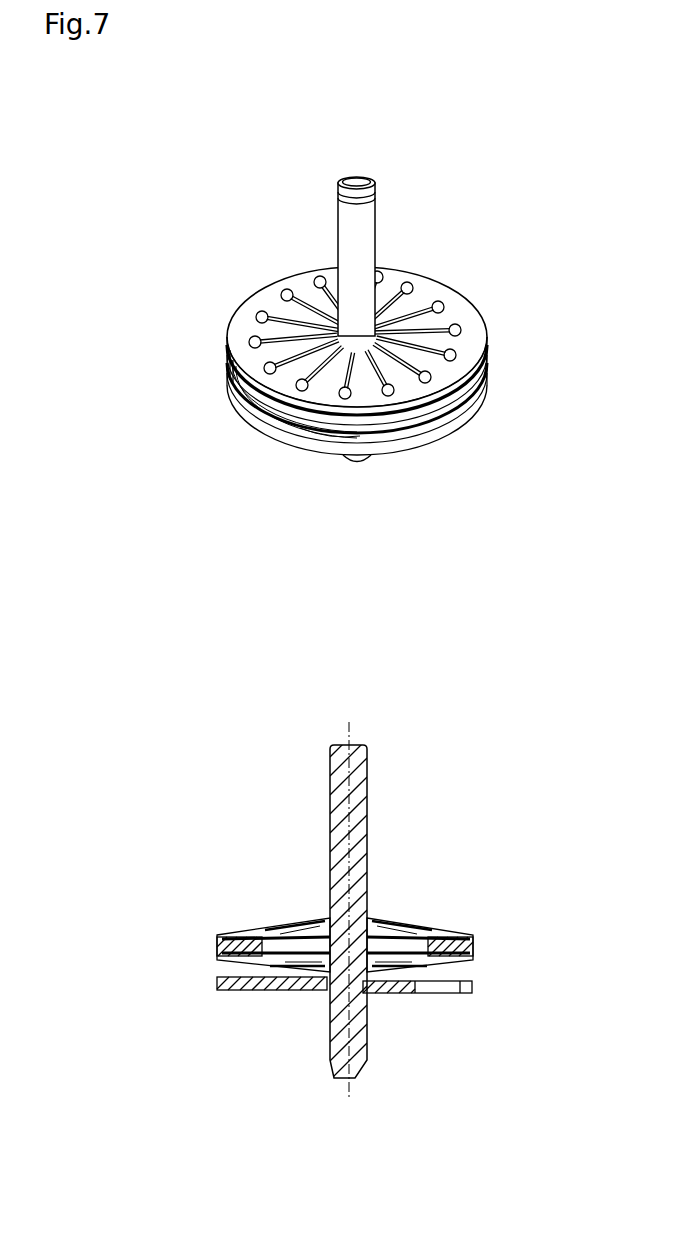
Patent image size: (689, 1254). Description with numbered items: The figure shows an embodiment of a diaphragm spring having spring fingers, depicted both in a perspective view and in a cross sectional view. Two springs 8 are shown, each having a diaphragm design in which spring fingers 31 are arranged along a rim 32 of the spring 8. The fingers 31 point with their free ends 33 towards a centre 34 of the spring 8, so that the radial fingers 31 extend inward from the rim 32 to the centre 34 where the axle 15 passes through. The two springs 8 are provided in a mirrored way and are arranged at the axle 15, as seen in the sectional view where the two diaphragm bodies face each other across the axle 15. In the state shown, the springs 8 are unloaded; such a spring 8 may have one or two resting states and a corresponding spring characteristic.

The spring 8 is at (254, 252).
The axle 15 is at (362, 243).
The spring fingers 31 is at (262, 350).
The rim 32 is at (467, 313).
The free ends 33 is at (400, 307).
The centre 34 is at (258, 303).